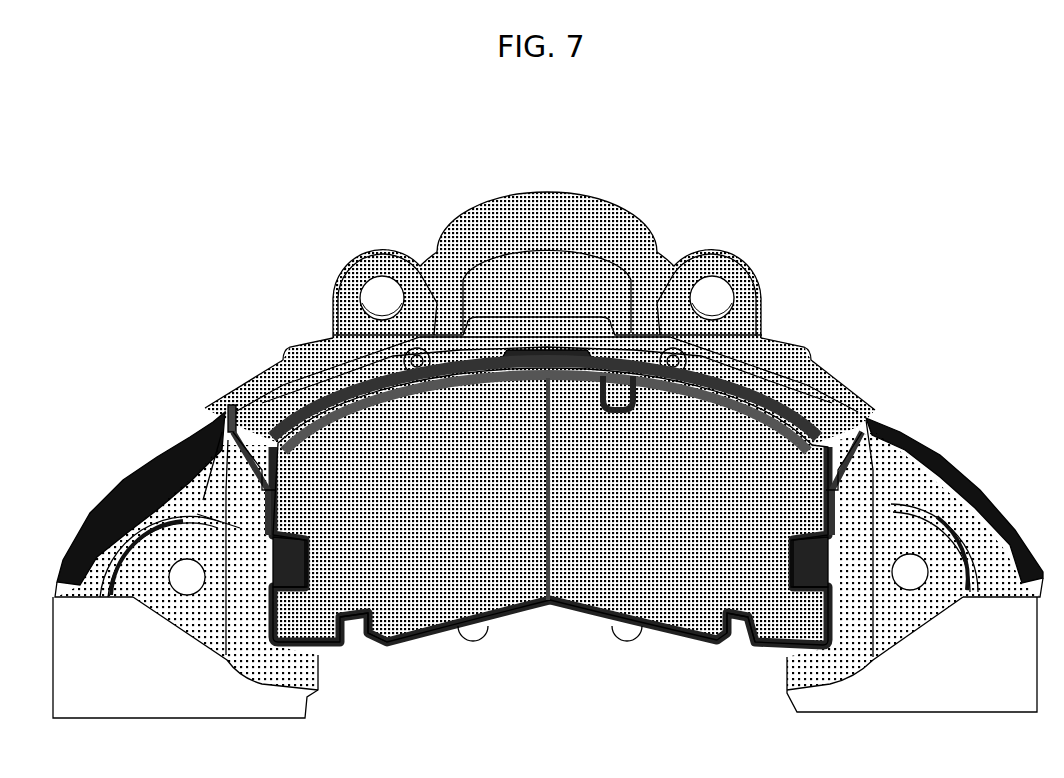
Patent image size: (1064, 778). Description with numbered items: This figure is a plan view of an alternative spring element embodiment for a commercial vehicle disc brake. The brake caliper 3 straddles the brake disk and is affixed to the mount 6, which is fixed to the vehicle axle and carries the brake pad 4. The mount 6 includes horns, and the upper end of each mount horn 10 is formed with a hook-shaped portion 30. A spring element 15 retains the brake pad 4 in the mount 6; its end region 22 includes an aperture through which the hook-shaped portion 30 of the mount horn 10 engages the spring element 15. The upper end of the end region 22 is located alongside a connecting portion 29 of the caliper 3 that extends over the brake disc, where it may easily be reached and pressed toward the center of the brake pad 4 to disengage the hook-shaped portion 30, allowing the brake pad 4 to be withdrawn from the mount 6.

The brake caliper 3 is at (630, 230).
The brake pad 4 is at (777, 402).
The mount 6 is at (940, 527).
The mount horn 10 is at (130, 490).
The spring element 15 is at (337, 652).
The spring element end region 22 is at (228, 407).
The connecting portion of the caliper 29 is at (180, 448).
The hook-shaped portion 30 is at (257, 447).